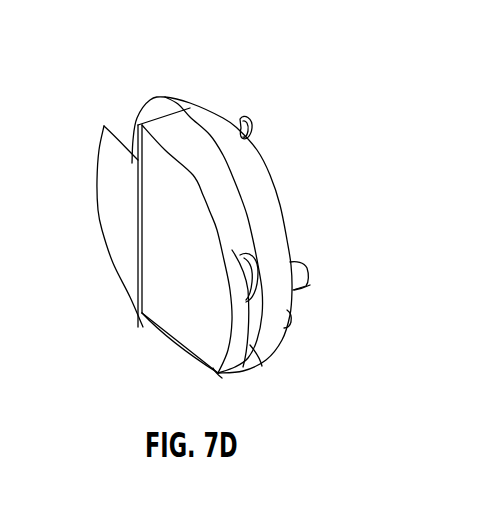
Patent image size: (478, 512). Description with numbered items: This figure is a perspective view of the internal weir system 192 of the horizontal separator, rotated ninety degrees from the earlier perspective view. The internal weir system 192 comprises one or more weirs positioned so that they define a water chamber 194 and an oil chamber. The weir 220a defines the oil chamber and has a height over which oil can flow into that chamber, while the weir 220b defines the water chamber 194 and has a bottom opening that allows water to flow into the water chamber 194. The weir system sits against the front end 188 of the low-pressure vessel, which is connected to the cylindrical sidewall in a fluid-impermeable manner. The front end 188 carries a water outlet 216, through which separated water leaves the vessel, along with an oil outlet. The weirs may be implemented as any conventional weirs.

The front end 188 is at (259, 157).
The water chamber 194 is at (233, 222).
The internal weir system 192 is at (143, 327).
The weir 220a is at (104, 126).
The weir 220b is at (218, 373).
The water outlet 216 is at (308, 283).